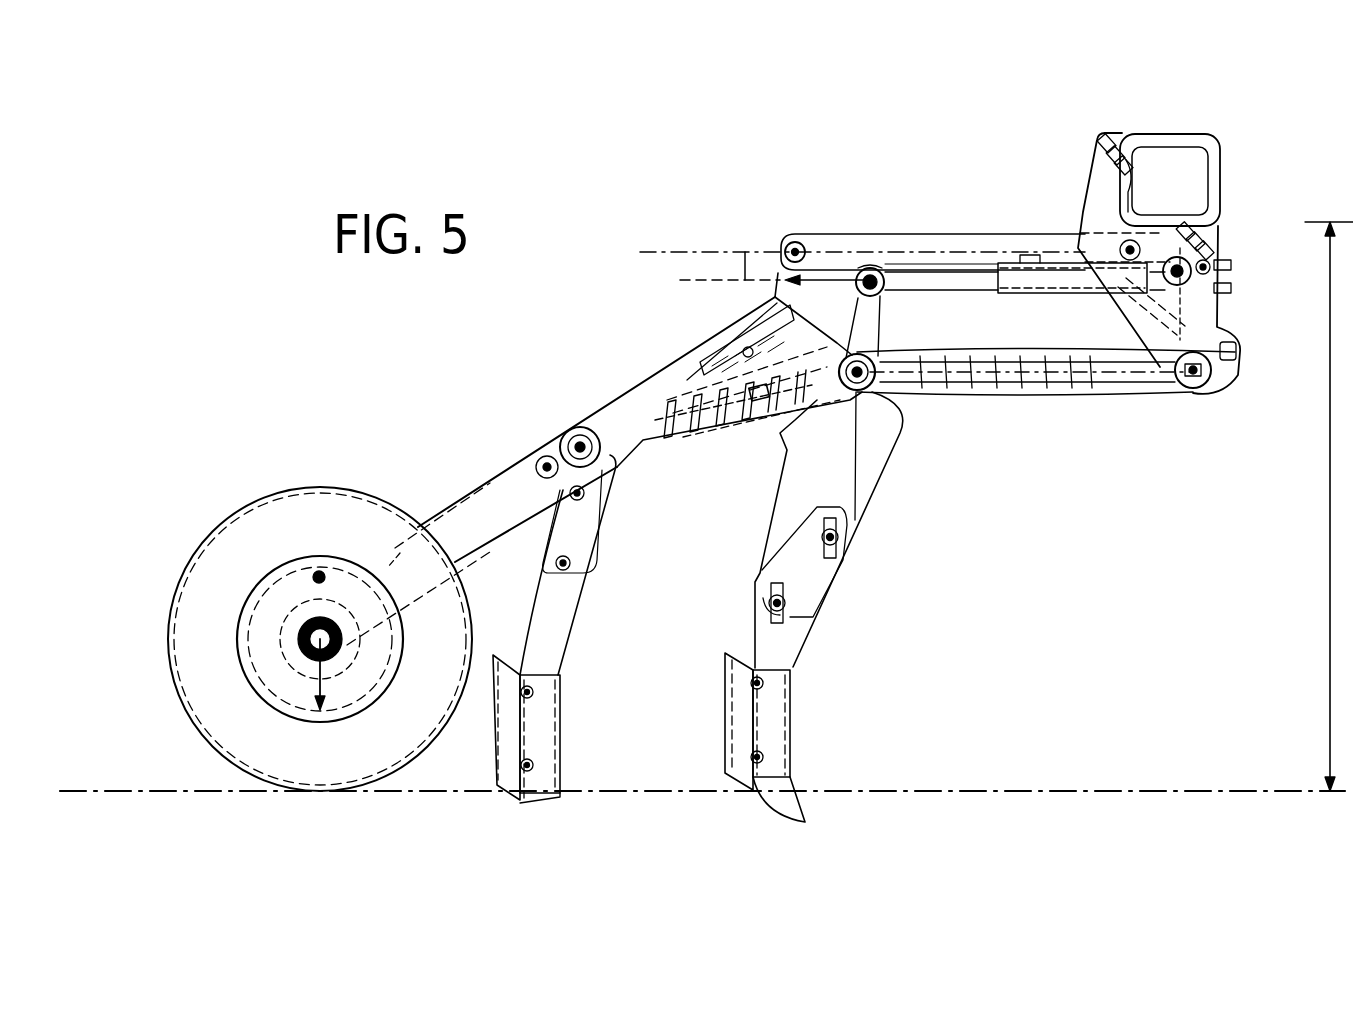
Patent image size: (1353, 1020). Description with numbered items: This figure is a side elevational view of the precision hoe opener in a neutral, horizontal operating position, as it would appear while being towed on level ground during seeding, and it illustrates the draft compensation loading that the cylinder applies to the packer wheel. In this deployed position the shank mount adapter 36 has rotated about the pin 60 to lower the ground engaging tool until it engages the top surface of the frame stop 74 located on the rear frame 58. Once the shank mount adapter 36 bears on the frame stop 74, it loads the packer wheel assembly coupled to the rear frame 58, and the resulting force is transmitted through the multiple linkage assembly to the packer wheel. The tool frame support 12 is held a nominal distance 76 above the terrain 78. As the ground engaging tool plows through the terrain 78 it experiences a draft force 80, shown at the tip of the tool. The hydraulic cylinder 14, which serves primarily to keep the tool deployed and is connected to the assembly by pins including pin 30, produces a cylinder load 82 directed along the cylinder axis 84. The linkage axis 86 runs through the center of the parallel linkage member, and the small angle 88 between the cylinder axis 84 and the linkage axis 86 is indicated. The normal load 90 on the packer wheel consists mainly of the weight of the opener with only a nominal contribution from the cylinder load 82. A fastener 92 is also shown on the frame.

The tool frame support 12 is at (1097, 205).
The hydraulic cylinder 14 is at (1073, 285).
The pin 30 is at (882, 266).
The shank mount adapter 36 is at (868, 490).
The rear frame 58 is at (752, 365).
The pin 60 is at (862, 392).
The frame stop 74 is at (767, 403).
The nominal distance 76 is at (1325, 506).
The terrain 78 is at (1110, 795).
The draft force 80 is at (805, 820).
The cylinder load 82 is at (878, 392).
The cylinder axis 84 is at (705, 282).
The linkage axis 86 is at (706, 250).
The angle 88 is at (745, 268).
The normal load 90 is at (320, 667).
The fastener 92 is at (1208, 262).